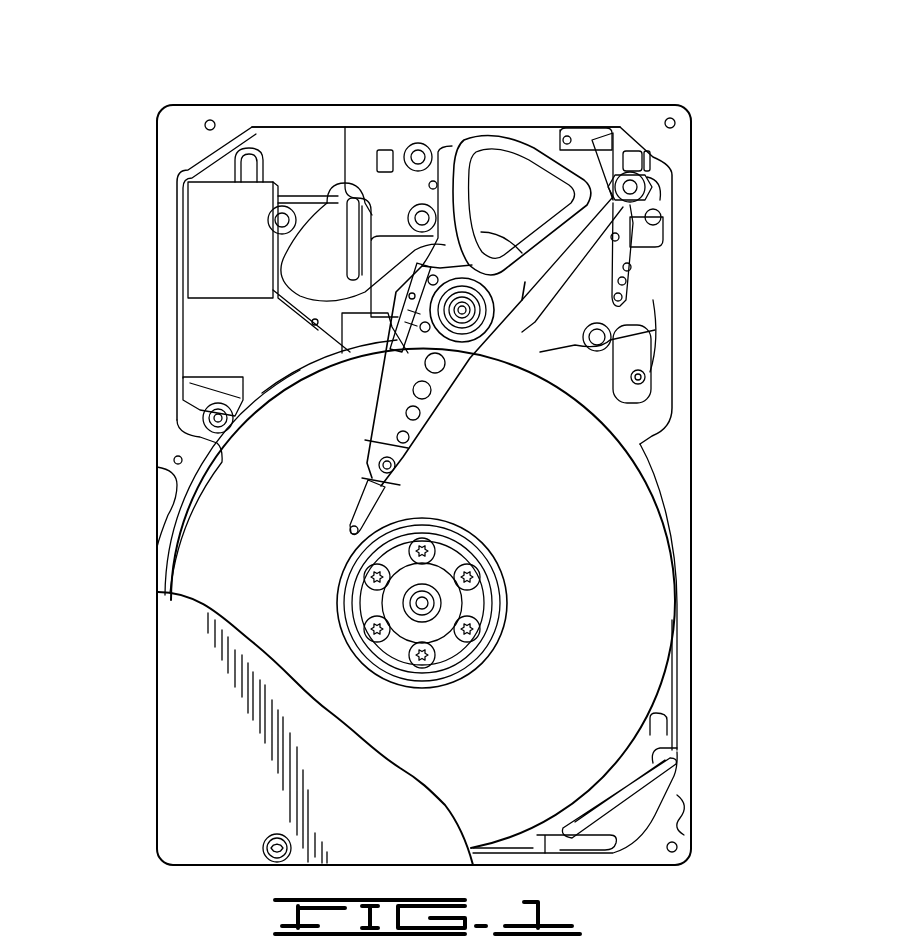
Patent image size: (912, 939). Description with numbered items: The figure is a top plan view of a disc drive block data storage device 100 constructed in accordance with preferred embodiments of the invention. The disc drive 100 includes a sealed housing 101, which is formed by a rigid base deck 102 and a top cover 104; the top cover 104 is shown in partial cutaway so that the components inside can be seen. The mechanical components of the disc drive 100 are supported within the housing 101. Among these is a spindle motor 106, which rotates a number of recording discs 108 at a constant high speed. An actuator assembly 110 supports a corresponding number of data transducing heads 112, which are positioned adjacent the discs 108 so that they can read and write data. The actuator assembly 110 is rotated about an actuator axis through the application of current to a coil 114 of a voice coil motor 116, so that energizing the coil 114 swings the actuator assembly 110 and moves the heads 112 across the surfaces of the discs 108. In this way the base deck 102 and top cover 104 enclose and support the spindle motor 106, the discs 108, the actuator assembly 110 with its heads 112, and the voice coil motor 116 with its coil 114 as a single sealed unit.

The disc drive block data storage device 100 is at (228, 68).
The sealed housing 101 is at (128, 163).
The rigid base deck 102 is at (290, 292).
The top cover 104 is at (183, 676).
The spindle motor 106 is at (440, 585).
The recording discs 108 is at (612, 650).
The actuator assembly 110 is at (466, 355).
The data transducing heads 112 is at (348, 530).
The coil 114 is at (508, 137).
The voice coil motor (VCM) 116 is at (547, 128).